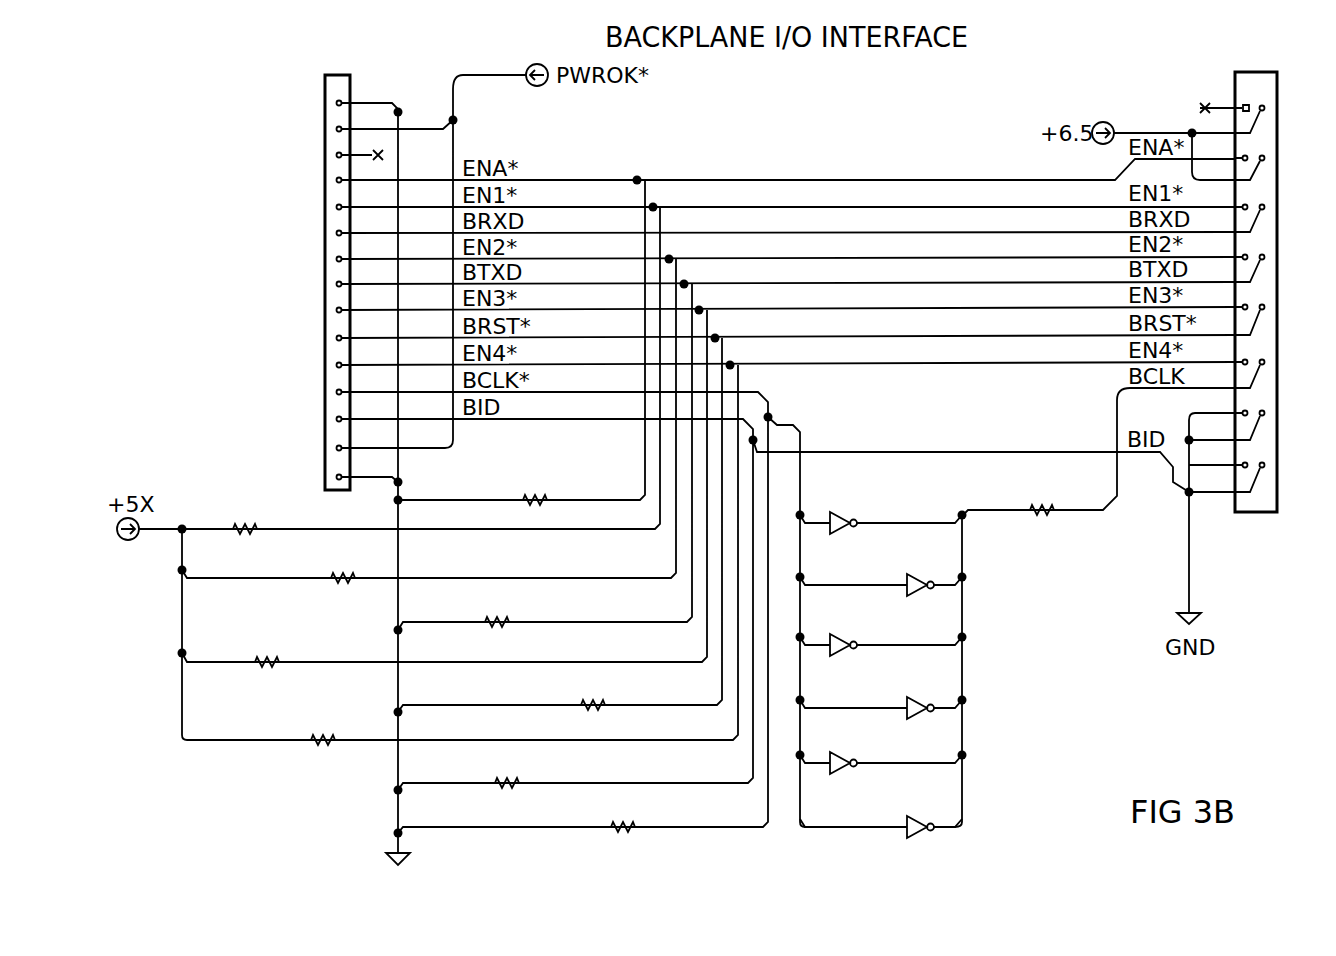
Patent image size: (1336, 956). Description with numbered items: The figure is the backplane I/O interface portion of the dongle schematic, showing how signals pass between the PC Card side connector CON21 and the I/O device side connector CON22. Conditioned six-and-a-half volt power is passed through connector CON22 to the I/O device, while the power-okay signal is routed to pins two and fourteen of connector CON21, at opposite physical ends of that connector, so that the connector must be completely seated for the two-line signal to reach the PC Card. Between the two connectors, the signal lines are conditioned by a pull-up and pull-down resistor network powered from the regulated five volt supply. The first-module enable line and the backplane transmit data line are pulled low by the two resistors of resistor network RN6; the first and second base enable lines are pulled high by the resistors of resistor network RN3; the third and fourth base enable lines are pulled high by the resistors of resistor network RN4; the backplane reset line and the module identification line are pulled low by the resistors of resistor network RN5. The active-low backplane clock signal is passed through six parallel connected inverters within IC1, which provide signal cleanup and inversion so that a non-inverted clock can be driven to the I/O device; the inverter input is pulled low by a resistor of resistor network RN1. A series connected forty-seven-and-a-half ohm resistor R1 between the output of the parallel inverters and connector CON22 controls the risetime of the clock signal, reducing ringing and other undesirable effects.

The connector CON21 is at (333, 266).
The connector CON22 is at (1263, 277).
The resistor network RN1 is at (622, 825).
The resistor network RN3 is at (296, 553).
The resistor network RN4 is at (295, 701).
The resistor network RN5 is at (548, 740).
The resistor network RN6 is at (513, 554).
The resistor R1 is at (1042, 509).
The inverter integrated circuit IC1 is at (881, 676).